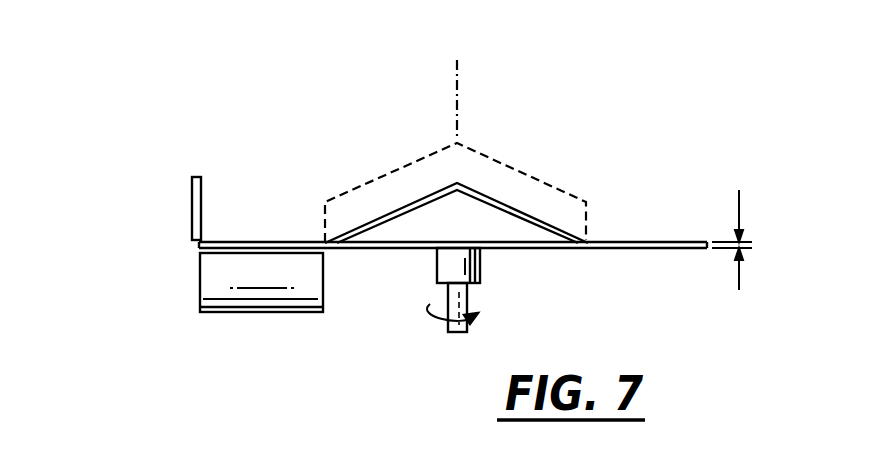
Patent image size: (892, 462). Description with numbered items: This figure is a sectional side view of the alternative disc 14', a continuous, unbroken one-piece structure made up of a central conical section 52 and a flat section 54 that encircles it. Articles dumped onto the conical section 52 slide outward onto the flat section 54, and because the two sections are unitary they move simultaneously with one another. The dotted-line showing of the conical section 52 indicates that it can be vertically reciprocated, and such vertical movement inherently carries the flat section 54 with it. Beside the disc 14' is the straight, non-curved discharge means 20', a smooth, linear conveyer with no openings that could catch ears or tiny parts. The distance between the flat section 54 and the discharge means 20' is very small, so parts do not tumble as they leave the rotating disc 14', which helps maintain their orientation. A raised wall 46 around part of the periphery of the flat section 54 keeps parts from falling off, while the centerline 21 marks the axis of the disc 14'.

The centerline axis 21 is at (466, 77).
The disc 14' is at (475, 176).
The conical section 52 is at (401, 208).
The raised wall 46 is at (184, 197).
The discharge means 20' is at (206, 284).
The flat section 54 is at (634, 240).